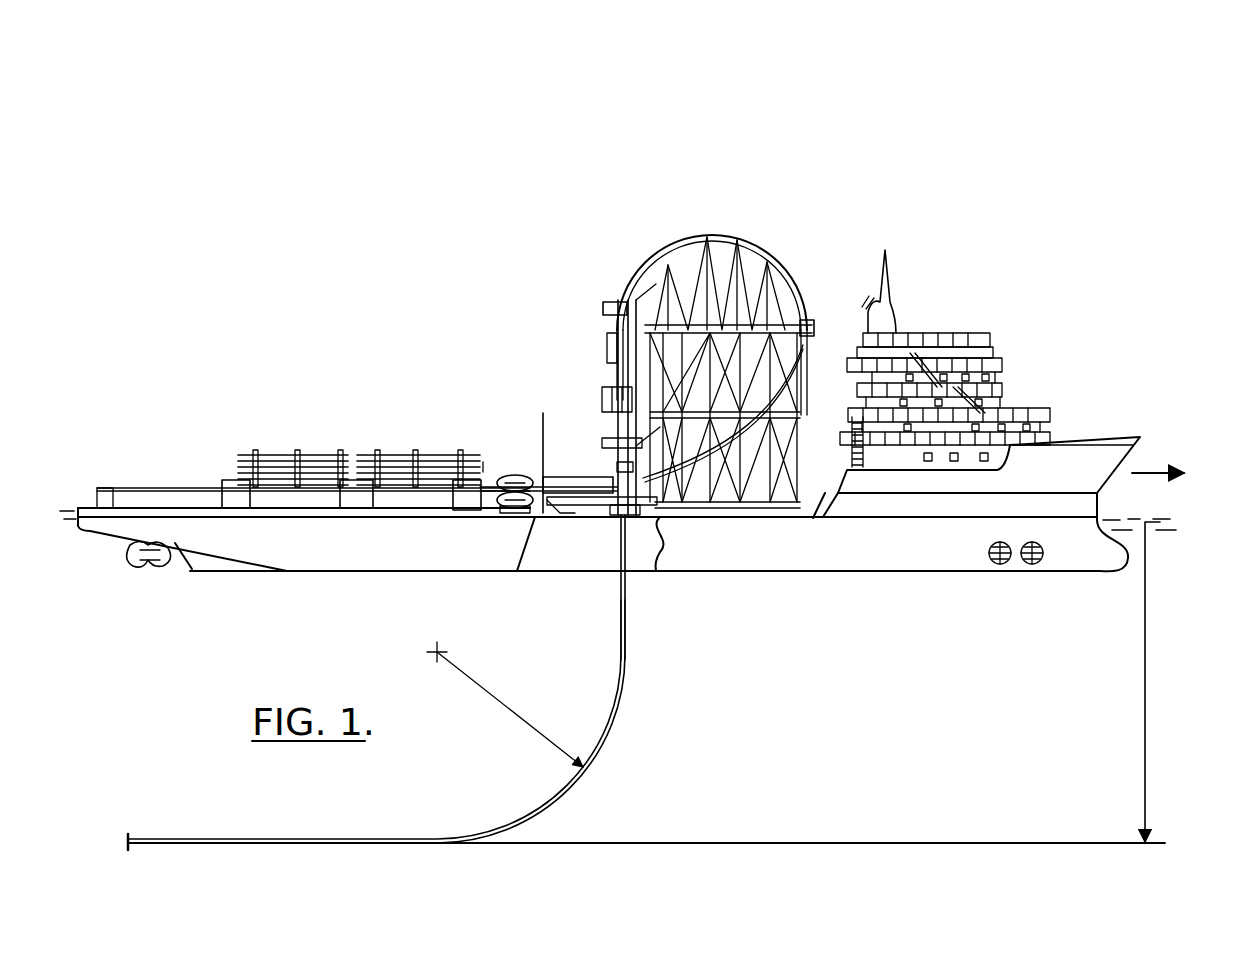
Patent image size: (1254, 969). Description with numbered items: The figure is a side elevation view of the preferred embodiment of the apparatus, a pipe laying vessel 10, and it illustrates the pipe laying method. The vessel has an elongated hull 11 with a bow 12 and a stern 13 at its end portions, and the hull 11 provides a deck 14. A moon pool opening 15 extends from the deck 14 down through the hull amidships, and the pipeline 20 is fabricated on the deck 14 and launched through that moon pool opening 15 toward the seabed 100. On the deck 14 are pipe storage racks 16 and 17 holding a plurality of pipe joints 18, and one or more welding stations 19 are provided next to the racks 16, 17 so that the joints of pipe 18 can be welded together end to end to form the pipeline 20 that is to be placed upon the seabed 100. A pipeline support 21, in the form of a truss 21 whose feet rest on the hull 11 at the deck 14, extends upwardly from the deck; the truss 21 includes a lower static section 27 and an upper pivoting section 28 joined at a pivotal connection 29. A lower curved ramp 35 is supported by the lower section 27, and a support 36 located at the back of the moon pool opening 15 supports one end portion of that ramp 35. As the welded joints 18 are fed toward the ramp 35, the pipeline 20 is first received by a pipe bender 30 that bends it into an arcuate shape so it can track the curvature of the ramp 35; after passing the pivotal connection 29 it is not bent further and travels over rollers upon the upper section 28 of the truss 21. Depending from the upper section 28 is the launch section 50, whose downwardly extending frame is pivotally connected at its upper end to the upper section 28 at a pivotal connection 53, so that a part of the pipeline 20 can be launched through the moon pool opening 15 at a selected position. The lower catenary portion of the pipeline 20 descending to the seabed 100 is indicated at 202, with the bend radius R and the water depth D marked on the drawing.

The pipe laying vessel 10 is at (1079, 131).
The hull 11 is at (850, 565).
The bow 12 is at (1143, 451).
The stern 13 is at (100, 528).
The deck 14 is at (264, 404).
The moon pool opening 15 is at (551, 545).
The pipe storage rack 16 is at (300, 450).
The pipe storage rack 17 is at (428, 452).
The pipe joints 18 is at (130, 487).
The welding station 19 is at (422, 500).
The pipeline 20 is at (150, 842).
The pipeline support truss 21 is at (735, 236).
The lower static section 27 is at (797, 441).
The upper pivoting section 28 is at (760, 268).
The pivotal connection 29 is at (812, 322).
The pipe bender 30 is at (515, 473).
The lower curved ramp 35 is at (562, 477).
The support 36 is at (545, 435).
The launch section 50 is at (592, 346).
The pivotal connection 53 is at (600, 305).
The seabed 100 is at (1057, 840).
The pipe catenary section 202 is at (621, 630).
The bend radius R is at (505, 695).
The water depth D is at (1145, 698).